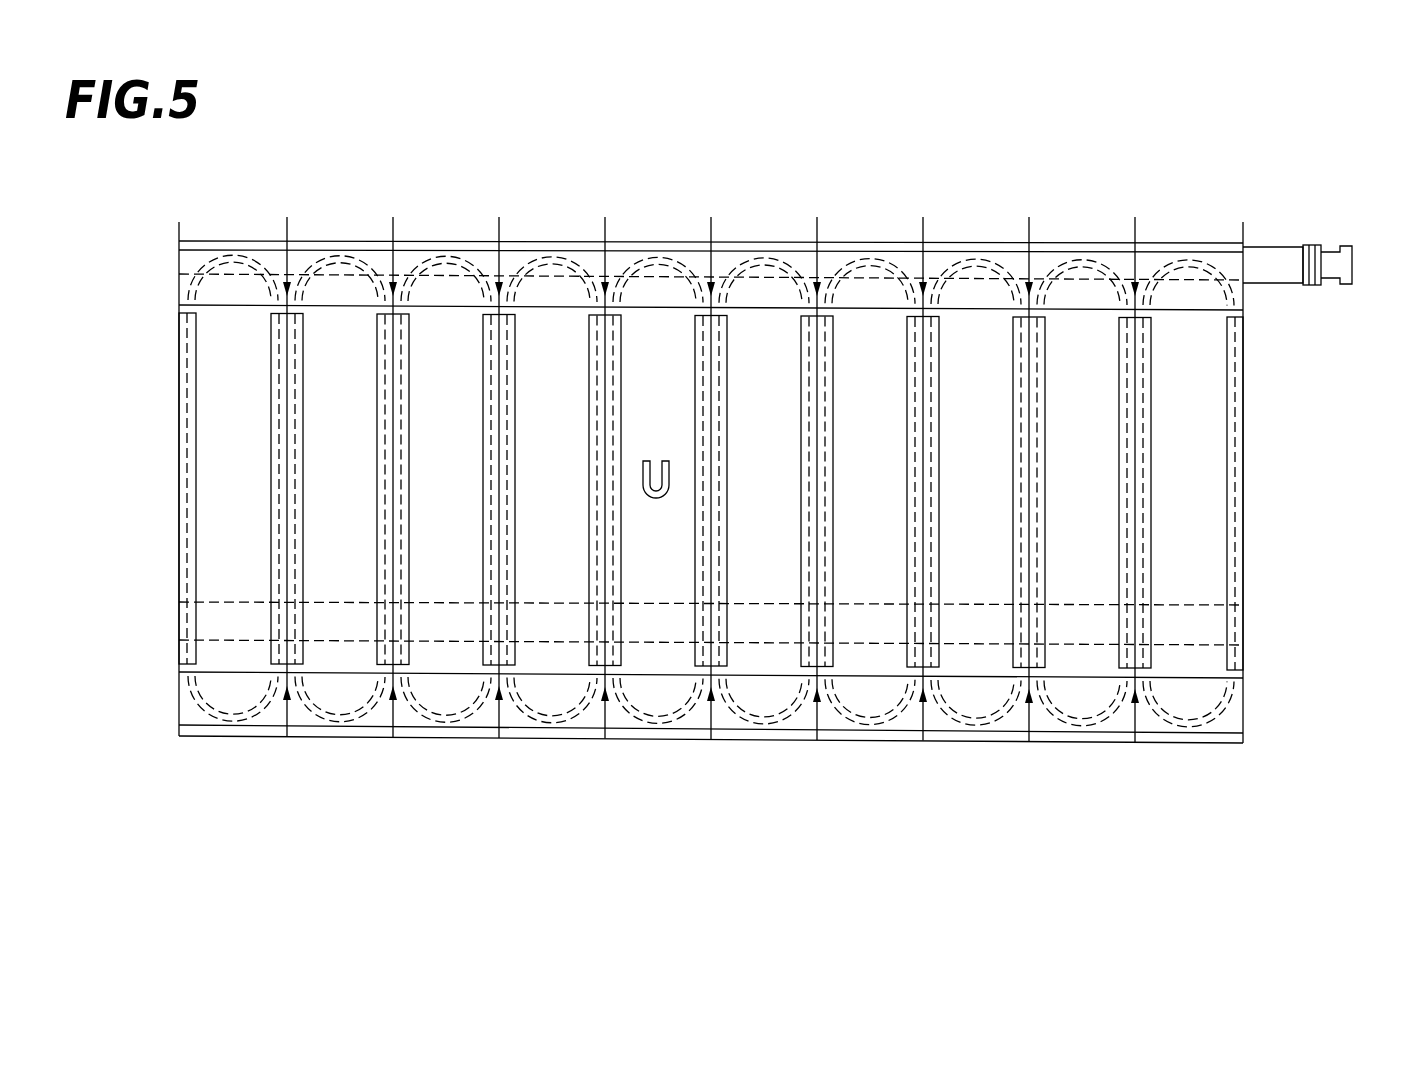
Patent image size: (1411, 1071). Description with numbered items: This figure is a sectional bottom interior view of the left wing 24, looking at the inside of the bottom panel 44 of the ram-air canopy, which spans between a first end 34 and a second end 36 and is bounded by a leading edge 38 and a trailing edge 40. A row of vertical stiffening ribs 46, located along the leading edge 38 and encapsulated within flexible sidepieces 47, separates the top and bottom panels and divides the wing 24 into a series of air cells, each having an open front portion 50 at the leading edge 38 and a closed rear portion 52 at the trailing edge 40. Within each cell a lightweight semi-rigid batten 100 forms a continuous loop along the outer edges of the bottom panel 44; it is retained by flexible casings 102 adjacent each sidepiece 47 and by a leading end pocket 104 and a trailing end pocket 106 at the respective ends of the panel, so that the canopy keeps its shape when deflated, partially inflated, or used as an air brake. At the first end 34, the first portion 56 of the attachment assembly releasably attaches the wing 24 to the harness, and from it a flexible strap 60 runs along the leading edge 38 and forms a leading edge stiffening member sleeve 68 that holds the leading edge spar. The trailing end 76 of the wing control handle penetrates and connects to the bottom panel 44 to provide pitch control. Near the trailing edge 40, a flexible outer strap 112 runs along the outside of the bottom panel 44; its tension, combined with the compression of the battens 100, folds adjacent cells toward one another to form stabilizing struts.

The left wing 24 is at (885, 168).
The first end 34 is at (1245, 226).
The second end 36 is at (180, 318).
The leading edge 38 is at (320, 241).
The trailing edge 40 is at (1075, 742).
The bottom panel 44 is at (1098, 484).
The vertical stiffening ribs 46 is at (497, 228).
The flexible sidepieces 47 is at (1025, 462).
The open front portion 50 is at (1197, 232).
The closed rear portion 52 is at (890, 733).
The first portion 56 is at (1332, 282).
The flexible strap 60 is at (1278, 277).
The leading edge stiffening member sleeve 68 is at (617, 263).
The trailing end 76 is at (656, 498).
The batten 100 is at (492, 425).
The flexible casings 102 is at (376, 442).
The leading end pocket 104 is at (232, 297).
The trailing end pocket 106 is at (232, 700).
The flexible outer strap 112 is at (1210, 623).